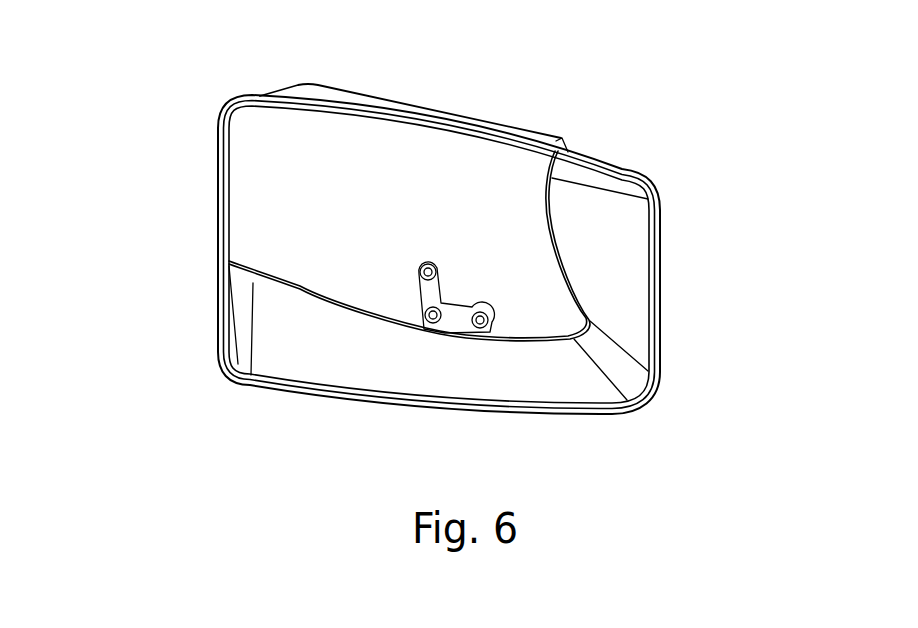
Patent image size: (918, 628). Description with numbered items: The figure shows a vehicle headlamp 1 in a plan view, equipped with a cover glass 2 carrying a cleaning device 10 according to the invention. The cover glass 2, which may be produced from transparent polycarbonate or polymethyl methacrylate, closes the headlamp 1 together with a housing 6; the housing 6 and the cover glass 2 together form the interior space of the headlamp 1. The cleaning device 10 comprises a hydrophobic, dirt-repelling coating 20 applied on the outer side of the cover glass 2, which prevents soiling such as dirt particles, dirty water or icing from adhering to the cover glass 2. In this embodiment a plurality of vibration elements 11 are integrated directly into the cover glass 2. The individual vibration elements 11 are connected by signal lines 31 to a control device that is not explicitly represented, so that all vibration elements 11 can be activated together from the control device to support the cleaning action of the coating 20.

The vehicle headlamp 1 is at (190, 377).
The cover glass 2 is at (457, 166).
The hydrophobic, dirt-repelling coating 20 is at (280, 159).
The housing 6 is at (599, 229).
The cleaning device 10 is at (427, 242).
The vibration elements 11 is at (486, 313).
The signal lines 31 is at (420, 288).